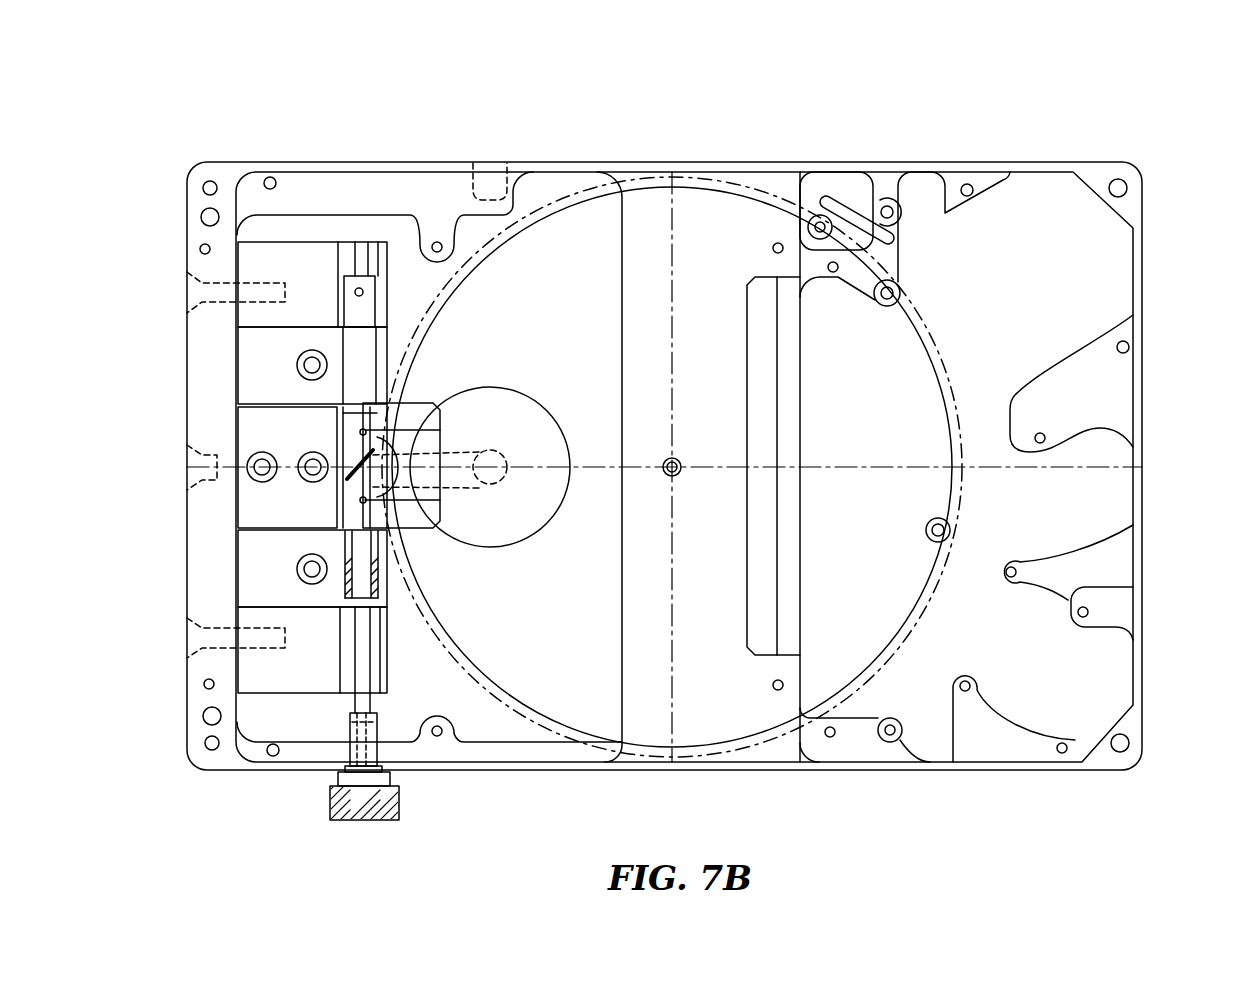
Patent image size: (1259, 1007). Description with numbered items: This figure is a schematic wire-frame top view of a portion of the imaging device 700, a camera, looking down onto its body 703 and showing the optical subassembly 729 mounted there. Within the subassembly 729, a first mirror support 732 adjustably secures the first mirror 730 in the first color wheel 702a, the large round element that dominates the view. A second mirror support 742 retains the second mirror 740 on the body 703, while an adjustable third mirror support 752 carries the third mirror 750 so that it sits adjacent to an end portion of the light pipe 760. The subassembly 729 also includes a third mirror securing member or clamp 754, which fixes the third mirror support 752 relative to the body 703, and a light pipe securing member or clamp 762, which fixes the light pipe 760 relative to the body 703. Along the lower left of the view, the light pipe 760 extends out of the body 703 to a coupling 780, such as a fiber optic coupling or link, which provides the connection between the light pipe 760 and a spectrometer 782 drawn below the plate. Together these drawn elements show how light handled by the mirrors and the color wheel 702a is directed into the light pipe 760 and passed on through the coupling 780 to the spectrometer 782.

The imaging device 700 is at (1152, 70).
The first color wheel 702a is at (727, 218).
The body 703 is at (1098, 172).
The subassembly 729 is at (408, 300).
The first mirror 730 is at (500, 460).
The first mirror support 732 is at (497, 408).
The second mirror 740 is at (427, 490).
The second mirror support 742 is at (253, 497).
The third mirror 750 is at (353, 455).
The third mirror support 752 is at (353, 305).
The third mirror securing member or clamp 754 is at (258, 347).
The light pipe 760 is at (360, 700).
The light pipe securing member or clamp 762 is at (248, 573).
The coupling 780 is at (325, 776).
The spectrometer 782 is at (332, 808).